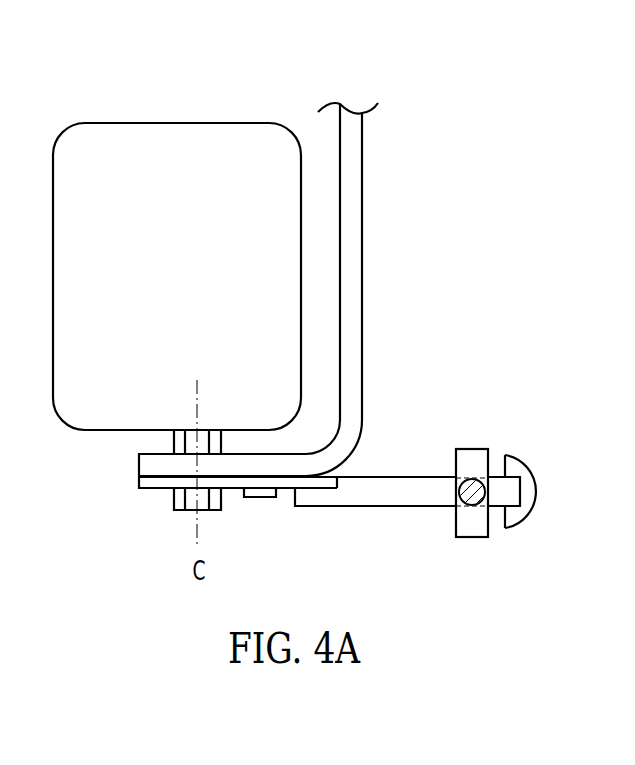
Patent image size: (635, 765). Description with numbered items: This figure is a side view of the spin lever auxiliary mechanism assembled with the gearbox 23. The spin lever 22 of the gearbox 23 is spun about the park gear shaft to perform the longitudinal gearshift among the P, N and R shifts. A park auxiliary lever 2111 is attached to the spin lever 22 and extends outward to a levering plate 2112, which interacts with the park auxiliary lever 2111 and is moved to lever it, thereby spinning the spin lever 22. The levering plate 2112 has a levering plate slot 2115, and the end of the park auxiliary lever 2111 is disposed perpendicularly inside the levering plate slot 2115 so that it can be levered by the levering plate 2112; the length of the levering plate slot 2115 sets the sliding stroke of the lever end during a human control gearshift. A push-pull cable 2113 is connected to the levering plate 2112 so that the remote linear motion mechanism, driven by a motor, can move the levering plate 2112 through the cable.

The gearbox 23 is at (172, 135).
The spin lever 22 is at (358, 257).
The park auxiliary lever 2111 is at (357, 500).
The levering plate 2112 is at (472, 453).
The push-pull cable 2113 is at (473, 500).
The levering plate slot 2115 is at (437, 508).